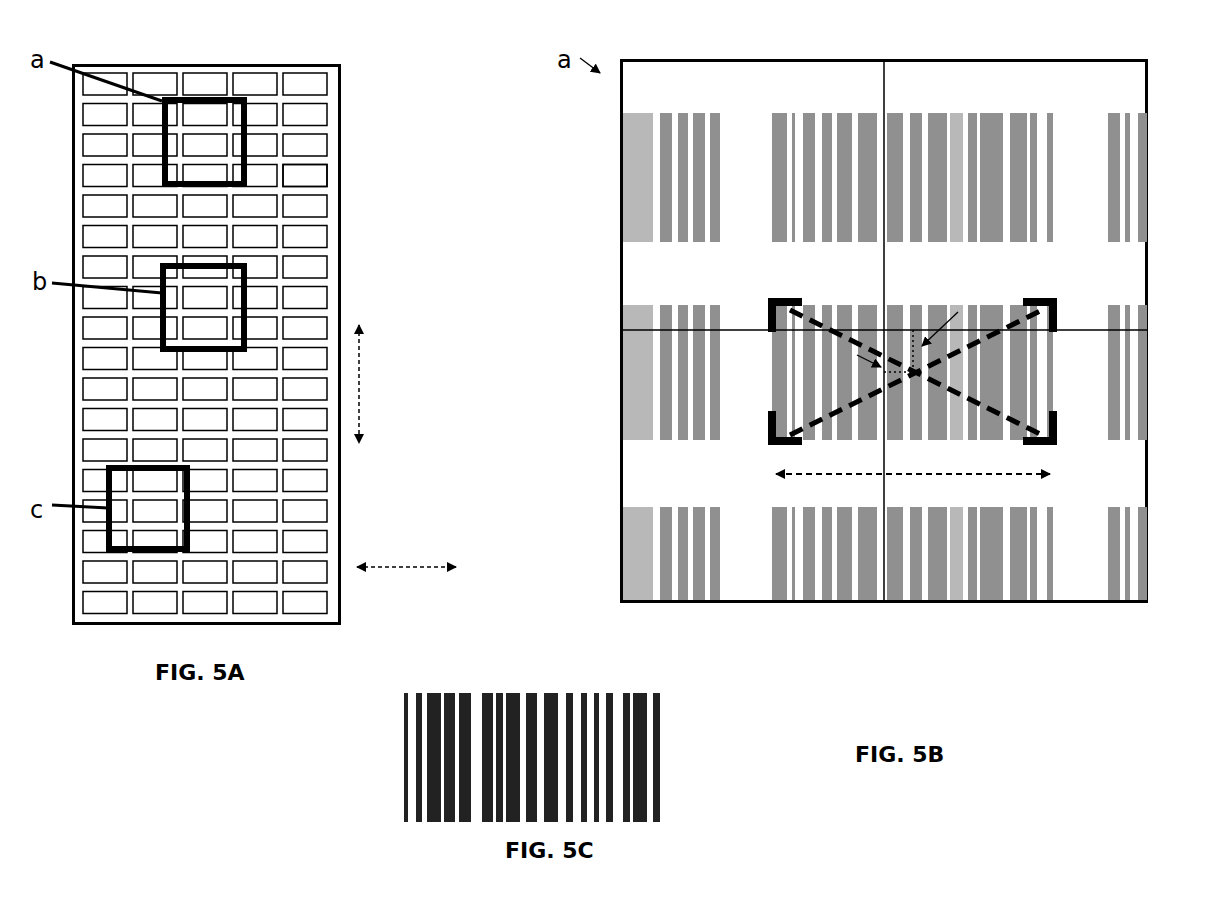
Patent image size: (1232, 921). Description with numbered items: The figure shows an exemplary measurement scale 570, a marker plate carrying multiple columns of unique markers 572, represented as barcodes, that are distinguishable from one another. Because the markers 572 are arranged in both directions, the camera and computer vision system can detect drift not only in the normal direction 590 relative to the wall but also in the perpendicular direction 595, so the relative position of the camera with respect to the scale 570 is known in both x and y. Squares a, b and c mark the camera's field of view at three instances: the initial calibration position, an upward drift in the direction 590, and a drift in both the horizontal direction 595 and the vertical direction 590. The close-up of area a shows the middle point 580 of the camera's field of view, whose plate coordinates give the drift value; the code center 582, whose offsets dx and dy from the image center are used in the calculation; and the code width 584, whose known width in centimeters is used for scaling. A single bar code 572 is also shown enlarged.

In FIG. 5A, the measurement scale 570 is at (352, 75).
In FIG. 5A, the unique marker 572 is at (302, 178).
In FIG. 5B, the unique marker 572 is at (637, 153).
In FIG. 5C, the unique marker 572 is at (415, 742).
In FIG. 5B, the middle point 580 is at (884, 330).
In FIG. 5B, the code center 582 is at (913, 384).
In FIG. 5B, the code width 584 is at (930, 476).
In FIG. 5A, the normal direction 590 is at (360, 405).
In FIG. 5A, the perpendicular direction 595 is at (382, 566).